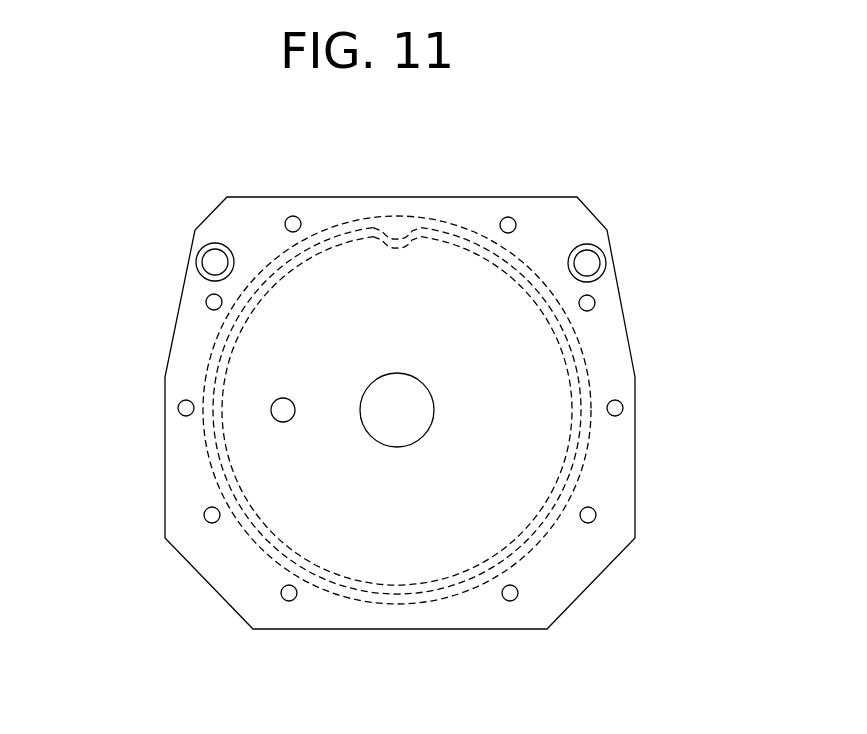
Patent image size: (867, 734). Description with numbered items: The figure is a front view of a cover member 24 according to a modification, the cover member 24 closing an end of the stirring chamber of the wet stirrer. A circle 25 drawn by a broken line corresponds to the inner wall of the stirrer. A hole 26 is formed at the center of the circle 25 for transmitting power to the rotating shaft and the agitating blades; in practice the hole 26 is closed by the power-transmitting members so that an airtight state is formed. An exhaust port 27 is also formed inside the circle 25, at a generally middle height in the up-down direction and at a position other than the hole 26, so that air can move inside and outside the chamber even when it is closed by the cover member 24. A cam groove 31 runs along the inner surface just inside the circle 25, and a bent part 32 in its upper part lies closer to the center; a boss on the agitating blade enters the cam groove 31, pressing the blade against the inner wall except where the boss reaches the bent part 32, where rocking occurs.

The cover member 24 is at (573, 213).
The circle 25 is at (578, 340).
The hole 26 is at (411, 424).
The exhaust port 27 is at (275, 418).
The cam groove 31 is at (580, 370).
The bent part 32 is at (403, 245).